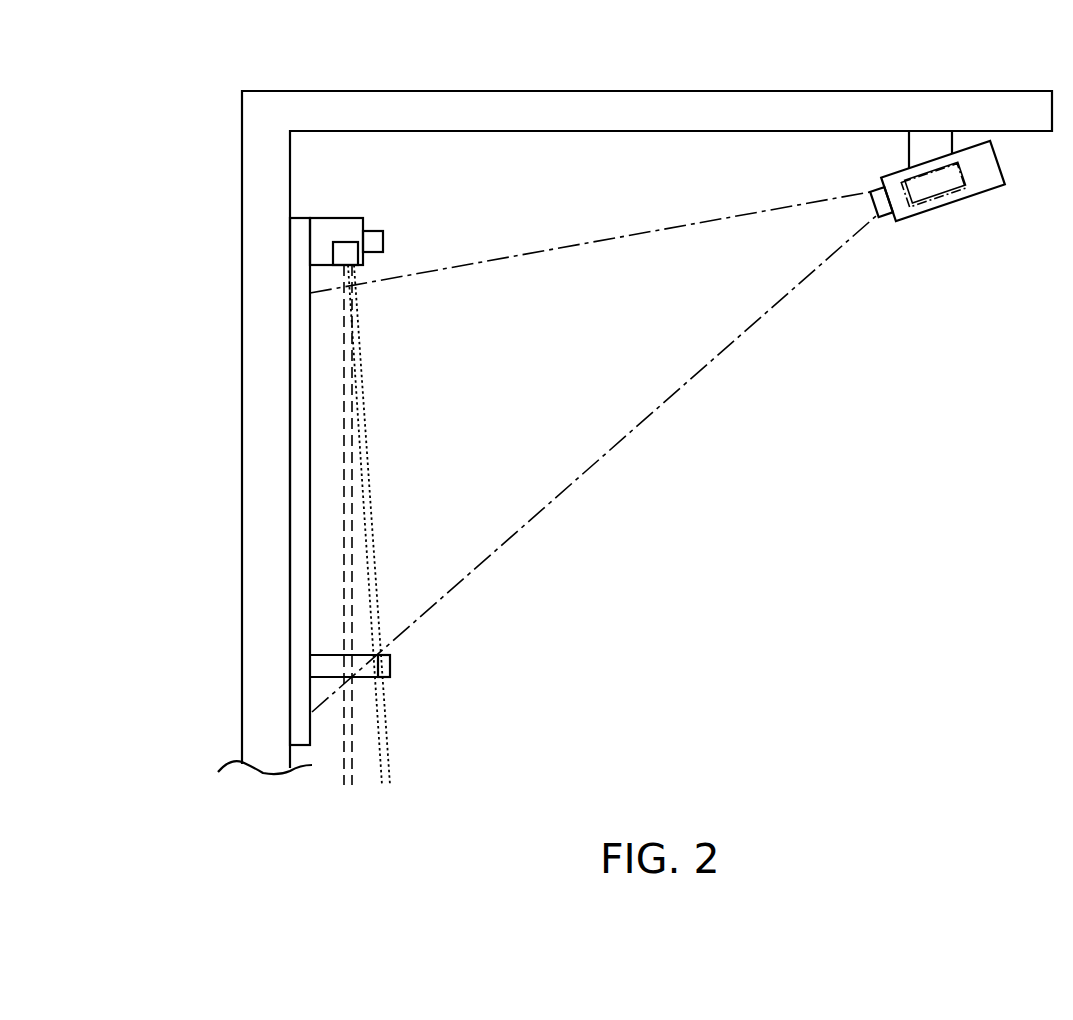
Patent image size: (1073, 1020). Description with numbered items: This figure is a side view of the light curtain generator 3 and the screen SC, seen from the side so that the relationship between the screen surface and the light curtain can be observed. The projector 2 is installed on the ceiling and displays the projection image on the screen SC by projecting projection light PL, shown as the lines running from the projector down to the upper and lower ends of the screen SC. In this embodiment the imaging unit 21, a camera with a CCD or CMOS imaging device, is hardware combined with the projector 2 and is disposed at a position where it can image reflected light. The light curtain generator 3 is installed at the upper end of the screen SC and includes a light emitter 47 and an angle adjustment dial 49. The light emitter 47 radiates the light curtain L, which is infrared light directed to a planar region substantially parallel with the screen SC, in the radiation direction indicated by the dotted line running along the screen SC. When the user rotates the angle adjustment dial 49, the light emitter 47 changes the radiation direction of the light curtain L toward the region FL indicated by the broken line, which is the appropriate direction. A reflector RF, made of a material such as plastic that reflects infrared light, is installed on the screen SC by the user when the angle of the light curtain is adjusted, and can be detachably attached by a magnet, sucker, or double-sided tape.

The projector 2 is at (1001, 160).
The imaging unit 21 is at (950, 203).
The light curtain generator 3 is at (320, 240).
The light emitter 47 is at (347, 240).
The angle adjustment dial 49 is at (385, 236).
The screen SC is at (296, 320).
The light curtain L is at (364, 458).
The region FL is at (356, 528).
The reflector RF is at (392, 663).
The projection light PL is at (620, 240).